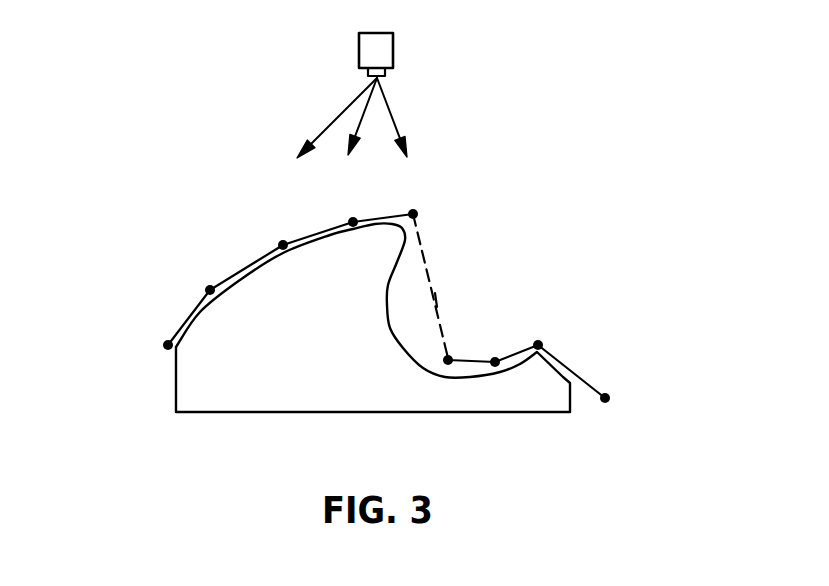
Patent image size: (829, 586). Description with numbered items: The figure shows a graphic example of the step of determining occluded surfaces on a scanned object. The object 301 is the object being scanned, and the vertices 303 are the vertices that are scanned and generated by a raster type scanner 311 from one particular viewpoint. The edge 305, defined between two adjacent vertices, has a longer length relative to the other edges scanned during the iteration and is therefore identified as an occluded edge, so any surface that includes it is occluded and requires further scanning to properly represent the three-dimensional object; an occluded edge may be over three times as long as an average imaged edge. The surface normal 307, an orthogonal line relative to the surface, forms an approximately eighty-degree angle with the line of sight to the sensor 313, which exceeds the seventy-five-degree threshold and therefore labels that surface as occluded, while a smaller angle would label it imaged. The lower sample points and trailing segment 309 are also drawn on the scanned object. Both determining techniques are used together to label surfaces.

The object 301 is at (174, 373).
The vertices 303 is at (289, 226).
The edge 305 is at (422, 243).
The surface normal 307 is at (487, 265).
The lower surface sample points and trailing segment 309 is at (563, 364).
The raster type scanner 311 is at (359, 50).
The sensor 313 is at (393, 117).